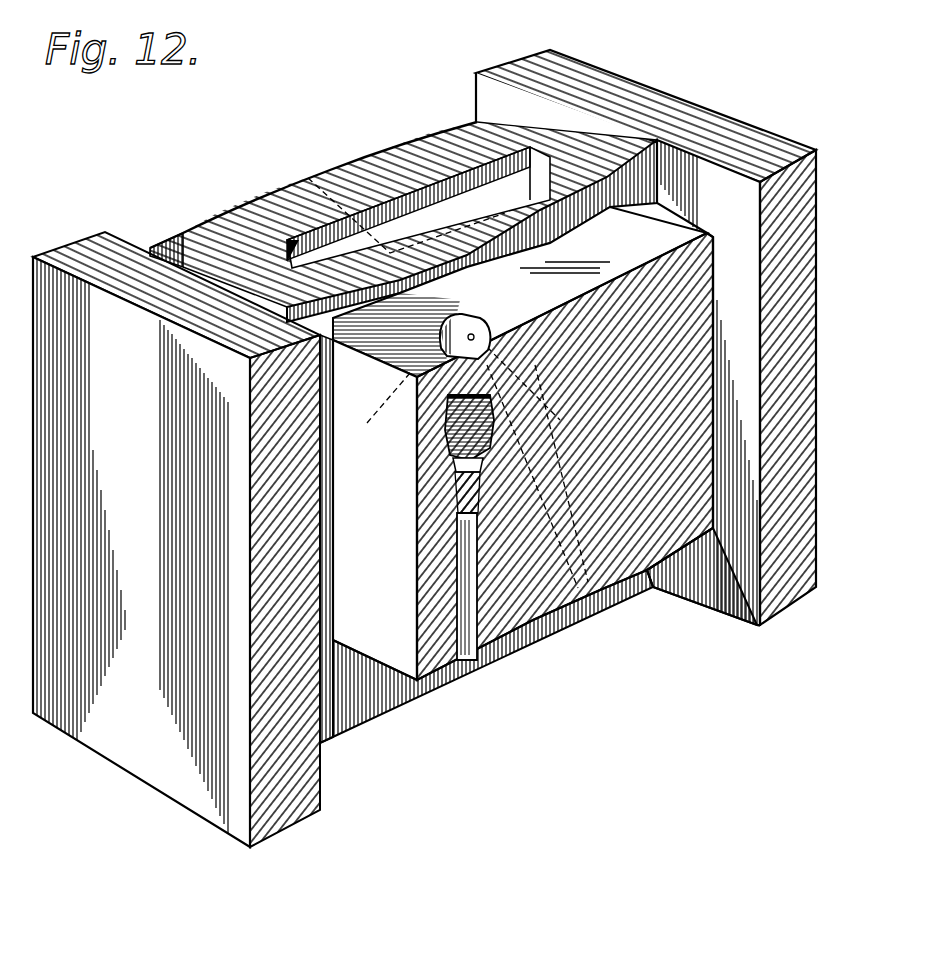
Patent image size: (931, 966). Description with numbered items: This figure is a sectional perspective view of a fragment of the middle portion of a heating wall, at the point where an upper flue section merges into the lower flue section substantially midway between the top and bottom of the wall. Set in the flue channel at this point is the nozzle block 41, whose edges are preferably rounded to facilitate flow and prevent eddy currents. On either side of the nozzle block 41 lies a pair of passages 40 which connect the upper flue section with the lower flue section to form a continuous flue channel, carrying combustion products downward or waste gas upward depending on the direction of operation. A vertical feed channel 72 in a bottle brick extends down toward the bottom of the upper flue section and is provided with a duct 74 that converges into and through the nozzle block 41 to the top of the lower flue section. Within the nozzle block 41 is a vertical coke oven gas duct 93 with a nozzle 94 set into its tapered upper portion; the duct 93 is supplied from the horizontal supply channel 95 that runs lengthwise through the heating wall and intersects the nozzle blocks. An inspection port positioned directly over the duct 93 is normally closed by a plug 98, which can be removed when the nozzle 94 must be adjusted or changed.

The passage 40 is at (695, 188).
The nozzle block 41 is at (633, 520).
The vertical feed channel 72 is at (513, 163).
The duct 74 is at (308, 178).
The vertical coke oven gas duct 93 is at (461, 622).
The nozzle 94 is at (456, 481).
The horizontal supply channel 95 is at (452, 442).
The plug 98 is at (477, 328).